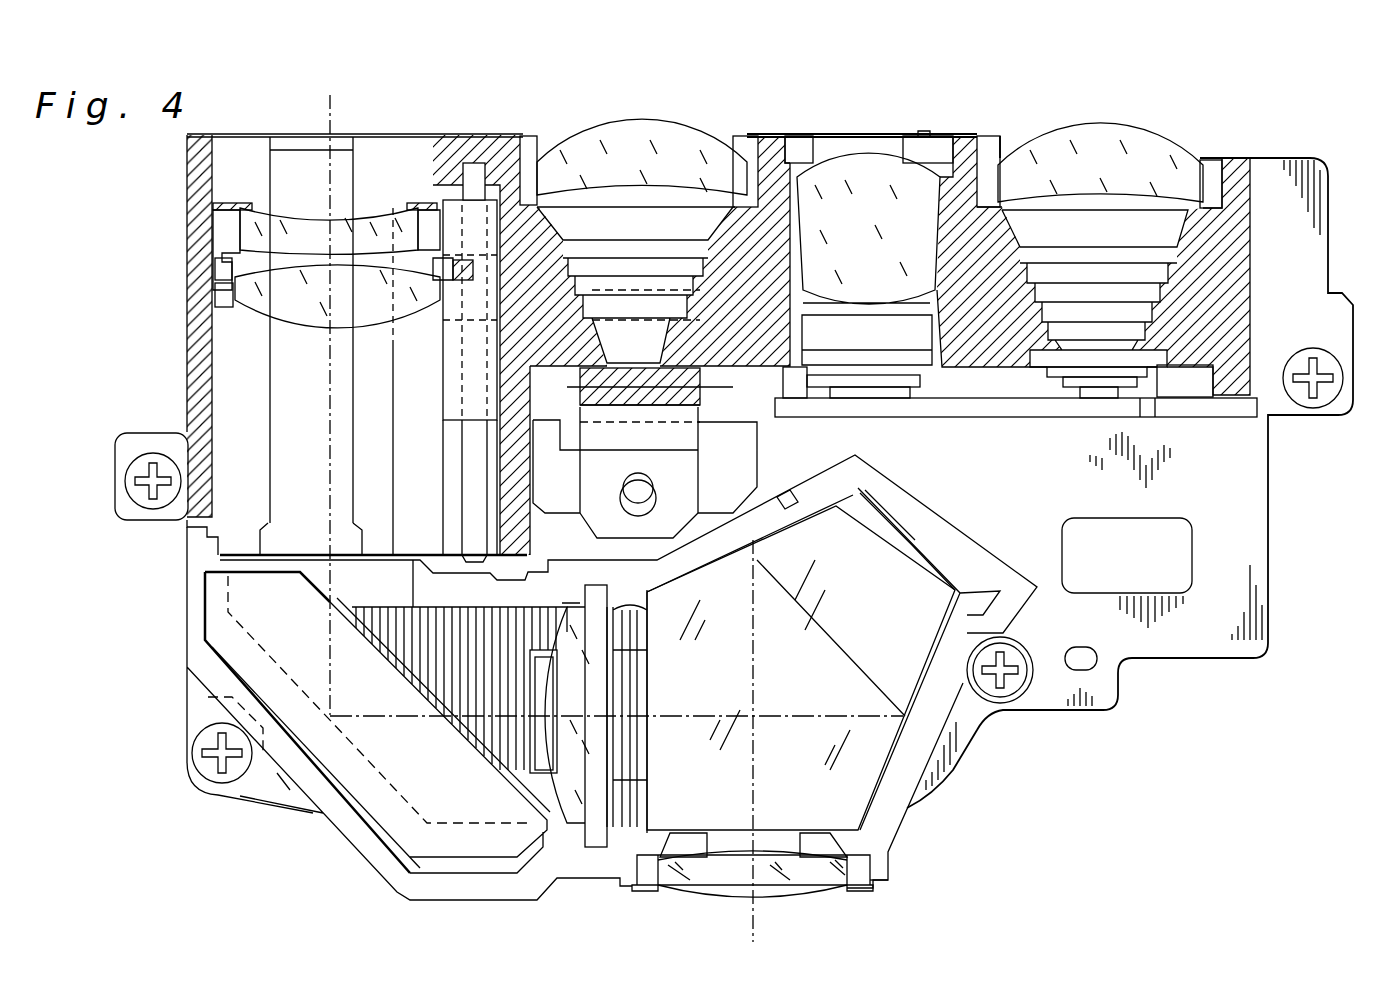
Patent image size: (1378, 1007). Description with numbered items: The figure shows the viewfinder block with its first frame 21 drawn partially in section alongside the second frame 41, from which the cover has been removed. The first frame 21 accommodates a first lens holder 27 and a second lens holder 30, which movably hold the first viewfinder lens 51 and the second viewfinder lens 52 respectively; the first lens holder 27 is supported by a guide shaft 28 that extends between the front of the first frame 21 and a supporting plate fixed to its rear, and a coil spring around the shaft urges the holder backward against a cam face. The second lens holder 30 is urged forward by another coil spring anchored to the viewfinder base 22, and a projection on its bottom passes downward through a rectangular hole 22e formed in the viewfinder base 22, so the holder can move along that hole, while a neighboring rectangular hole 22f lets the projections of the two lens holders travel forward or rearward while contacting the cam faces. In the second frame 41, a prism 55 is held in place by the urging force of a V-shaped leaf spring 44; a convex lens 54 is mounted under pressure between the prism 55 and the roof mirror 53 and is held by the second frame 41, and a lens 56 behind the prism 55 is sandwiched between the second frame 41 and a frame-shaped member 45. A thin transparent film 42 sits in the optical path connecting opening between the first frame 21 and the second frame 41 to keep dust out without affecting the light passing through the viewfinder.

The first frame 21 is at (462, 142).
The viewfinder base 22 is at (1015, 480).
The rectangular hole 22e is at (432, 395).
The rectangular hole 22f is at (311, 395).
The first lens holder 27 is at (231, 206).
The guide shaft 28 is at (466, 491).
The second lens holder 30 is at (227, 302).
The second frame 41 is at (190, 633).
The thin transparent film 42 is at (303, 553).
The V-shaped leaf spring 44 is at (893, 520).
The frame-shaped member 45 is at (651, 890).
The first viewfinder lens 51 is at (310, 240).
The second viewfinder lens 52 is at (309, 310).
The roof mirror 53 is at (292, 695).
The convex lens 54 is at (587, 700).
The prism 55 is at (720, 699).
The lens 56 is at (732, 888).